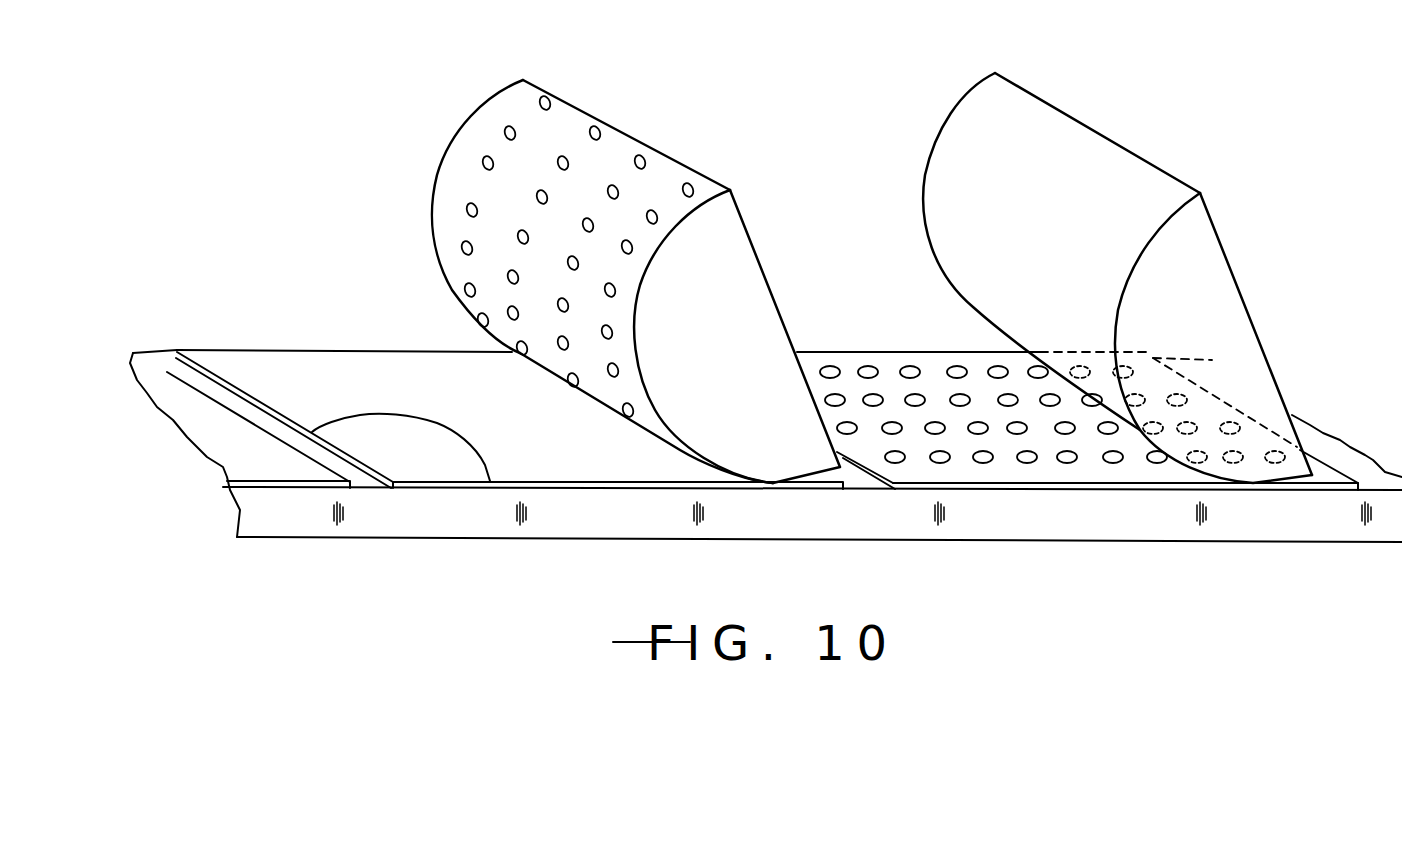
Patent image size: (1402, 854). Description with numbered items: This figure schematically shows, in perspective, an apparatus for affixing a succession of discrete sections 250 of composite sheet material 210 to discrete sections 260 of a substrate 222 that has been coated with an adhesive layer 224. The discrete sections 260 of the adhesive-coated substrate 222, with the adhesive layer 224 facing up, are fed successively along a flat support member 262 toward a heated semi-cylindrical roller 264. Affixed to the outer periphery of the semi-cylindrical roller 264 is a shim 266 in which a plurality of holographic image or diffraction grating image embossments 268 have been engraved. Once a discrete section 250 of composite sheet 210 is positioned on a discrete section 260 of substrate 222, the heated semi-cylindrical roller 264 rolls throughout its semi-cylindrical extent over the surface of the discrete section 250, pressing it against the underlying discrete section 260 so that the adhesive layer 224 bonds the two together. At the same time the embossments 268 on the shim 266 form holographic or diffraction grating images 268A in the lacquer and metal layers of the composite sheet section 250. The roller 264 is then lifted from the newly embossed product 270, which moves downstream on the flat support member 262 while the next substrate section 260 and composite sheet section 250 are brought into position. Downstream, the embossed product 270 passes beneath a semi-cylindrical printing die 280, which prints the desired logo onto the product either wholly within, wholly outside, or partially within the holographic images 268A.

The composite sheet material 210 is at (230, 444).
The substrate 222 is at (463, 487).
The adhesive layer 224 is at (432, 458).
The discrete section of composite sheet 250 is at (162, 390).
The discrete section of substrate 260 is at (268, 483).
The flat support member 262 is at (983, 520).
The heated semi-cylindrical roller 264 is at (740, 277).
The shim 266 is at (713, 207).
The embossments 268 is at (510, 126).
The holographic or diffraction grating images 268A is at (957, 365).
The newly embossed product 270 is at (1223, 400).
The semi-cylindrical printing die 280 is at (967, 117).